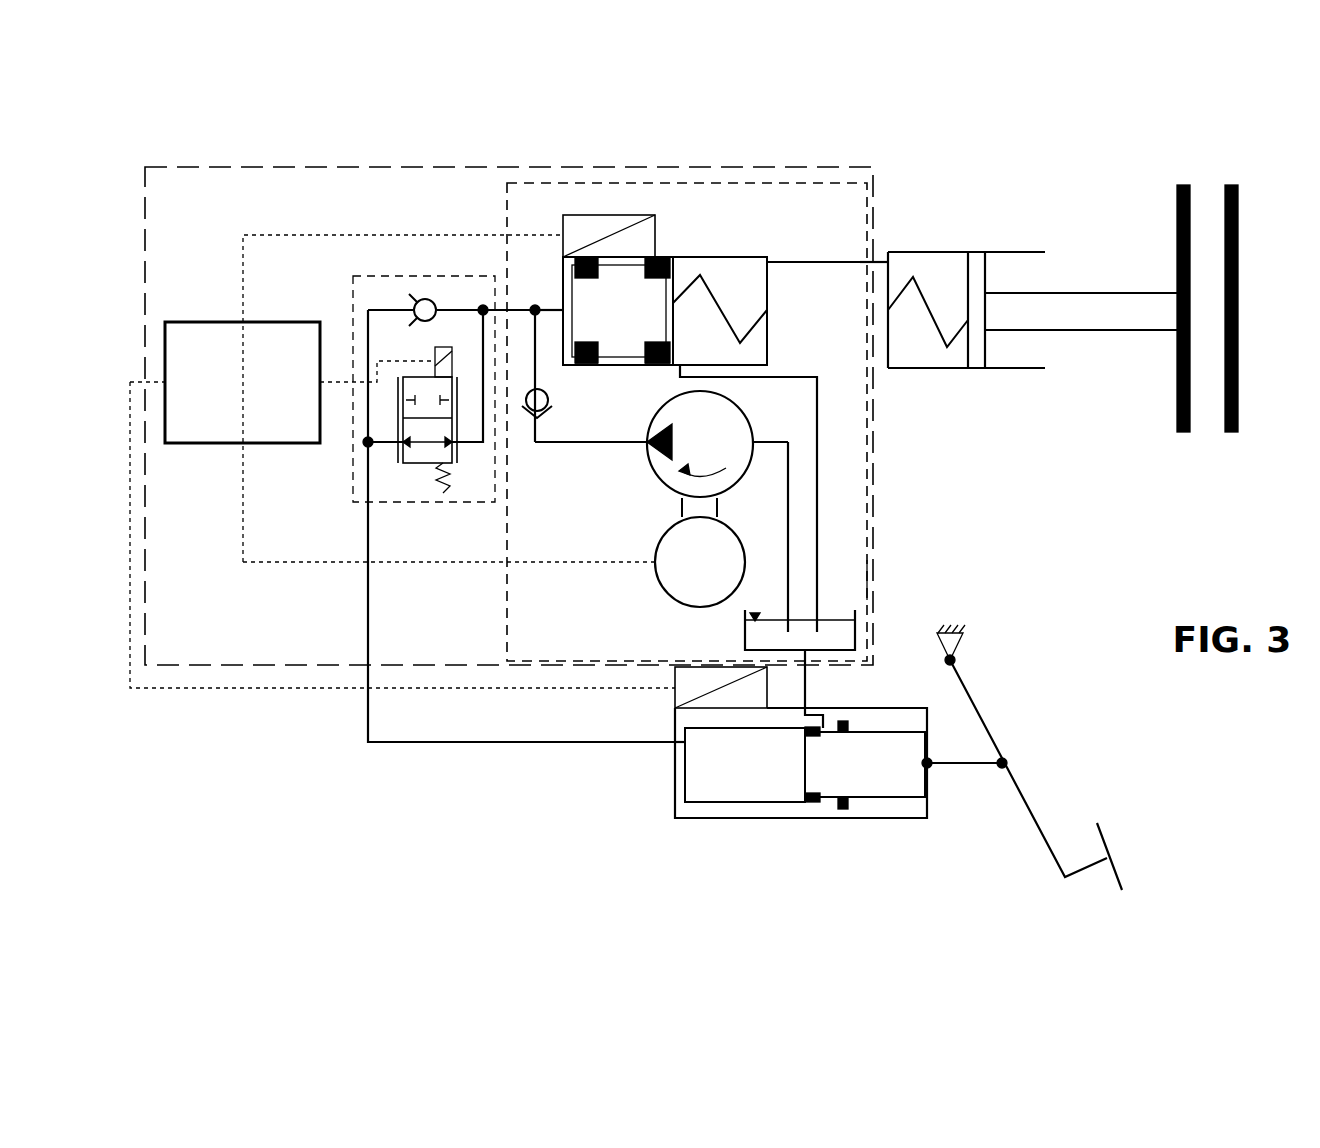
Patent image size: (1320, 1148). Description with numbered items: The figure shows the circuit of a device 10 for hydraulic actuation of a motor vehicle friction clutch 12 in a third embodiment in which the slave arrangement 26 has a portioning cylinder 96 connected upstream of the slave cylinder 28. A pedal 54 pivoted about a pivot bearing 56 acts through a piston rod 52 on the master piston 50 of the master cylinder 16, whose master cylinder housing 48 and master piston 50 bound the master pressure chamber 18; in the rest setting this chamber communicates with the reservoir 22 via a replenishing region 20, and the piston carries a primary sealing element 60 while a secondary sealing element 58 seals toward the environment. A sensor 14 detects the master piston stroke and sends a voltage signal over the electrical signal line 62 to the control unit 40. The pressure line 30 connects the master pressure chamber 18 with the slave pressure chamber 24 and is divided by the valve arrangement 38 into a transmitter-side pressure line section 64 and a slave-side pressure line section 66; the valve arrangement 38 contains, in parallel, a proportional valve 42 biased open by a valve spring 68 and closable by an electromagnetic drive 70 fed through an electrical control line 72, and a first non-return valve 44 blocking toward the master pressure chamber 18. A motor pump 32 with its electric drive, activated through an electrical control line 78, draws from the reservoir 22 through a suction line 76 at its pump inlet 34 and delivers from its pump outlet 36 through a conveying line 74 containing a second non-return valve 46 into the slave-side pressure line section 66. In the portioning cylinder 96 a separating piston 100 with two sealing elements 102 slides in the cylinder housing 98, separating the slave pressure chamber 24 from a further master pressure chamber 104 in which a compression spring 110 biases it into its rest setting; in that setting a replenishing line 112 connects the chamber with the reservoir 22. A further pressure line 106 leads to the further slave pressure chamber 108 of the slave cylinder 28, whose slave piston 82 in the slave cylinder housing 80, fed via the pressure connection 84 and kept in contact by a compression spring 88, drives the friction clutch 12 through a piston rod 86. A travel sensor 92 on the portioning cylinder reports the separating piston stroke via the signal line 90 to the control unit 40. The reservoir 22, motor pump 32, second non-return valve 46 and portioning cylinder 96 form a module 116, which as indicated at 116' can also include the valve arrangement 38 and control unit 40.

The device for hydraulic actuation of a motor vehicle friction clutch 10 is at (737, 140).
The motor vehicle friction clutch 12 is at (1208, 164).
The sensor 14 is at (683, 665).
The master cylinder 16 is at (780, 821).
The master pressure chamber 18 is at (745, 765).
The replenishing region 20 is at (824, 716).
The reservoir 22 is at (829, 632).
The slave pressure chamber 24 is at (549, 308).
The slave arrangement 26 is at (899, 225).
The slave cylinder 28 is at (960, 373).
The pressure line 30 is at (466, 745).
The motor pump 32 is at (700, 444).
The pump inlet 34 is at (754, 428).
The pump outlet 36 is at (648, 443).
The valve arrangement 38 is at (351, 484).
The control unit 40 is at (242, 382).
The proportional valve 42 is at (423, 468).
The first non-return valve 44 is at (430, 298).
The second non-return valve 46 is at (537, 432).
The master cylinder housing 48 is at (706, 818).
The master piston 50 is at (865, 764).
The piston rod 52 is at (950, 767).
The pedal 54 is at (994, 741).
The pivot bearing 56 is at (954, 661).
The secondary sealing element 58 is at (845, 810).
The primary sealing element 60 is at (812, 803).
The electrical signal line 62 is at (265, 690).
The transmitter-side pressure line section 64 is at (560, 745).
The slave-side pressure line section 66 is at (502, 308).
The valve spring 68 is at (450, 486).
The electromagnetic drive 70 is at (440, 352).
The electrical control line 72 is at (345, 380).
The conveying line 74 is at (549, 442).
The suction line 76 is at (788, 470).
The electrical control line 78 is at (615, 560).
The slave cylinder housing 80 is at (898, 370).
The slave piston 82 is at (978, 276).
The pressure connection 84 is at (884, 265).
The piston rod 86 is at (1110, 310).
The compression spring 88 is at (931, 312).
The signal line 90 is at (420, 236).
The travel sensor 92 is at (656, 234).
The portioning cylinder 96 is at (758, 255).
The cylinder housing 98 is at (712, 257).
The separating piston 100 is at (618, 311).
The sealing elements 102 is at (650, 366).
The further master pressure chamber 104 is at (768, 352).
The further pressure line 106 is at (810, 262).
The further slave pressure chamber 108 is at (918, 262).
The compression spring 110 is at (691, 312).
The replenishing line 112 is at (818, 442).
The module 116 is at (719, 422).
The module 116' is at (906, 562).